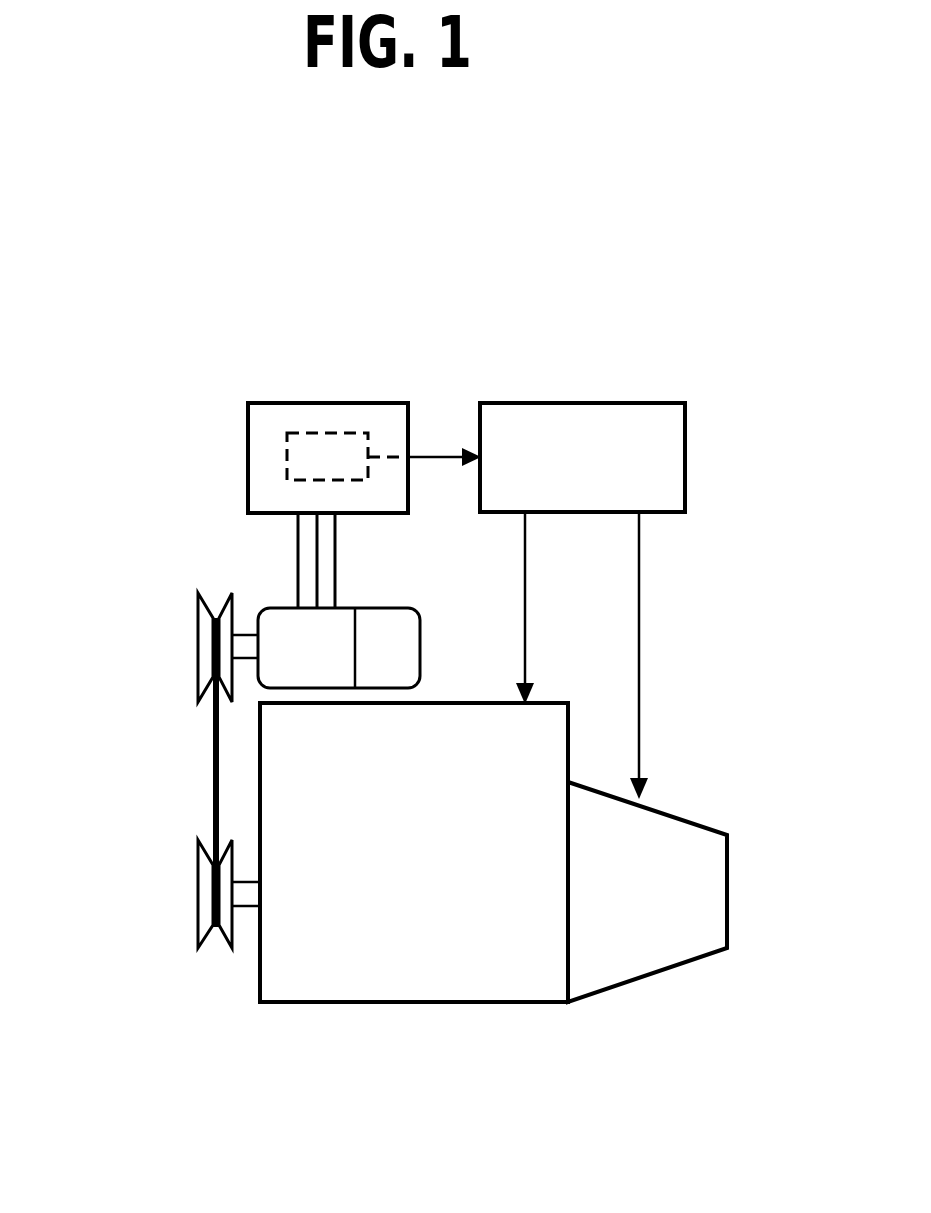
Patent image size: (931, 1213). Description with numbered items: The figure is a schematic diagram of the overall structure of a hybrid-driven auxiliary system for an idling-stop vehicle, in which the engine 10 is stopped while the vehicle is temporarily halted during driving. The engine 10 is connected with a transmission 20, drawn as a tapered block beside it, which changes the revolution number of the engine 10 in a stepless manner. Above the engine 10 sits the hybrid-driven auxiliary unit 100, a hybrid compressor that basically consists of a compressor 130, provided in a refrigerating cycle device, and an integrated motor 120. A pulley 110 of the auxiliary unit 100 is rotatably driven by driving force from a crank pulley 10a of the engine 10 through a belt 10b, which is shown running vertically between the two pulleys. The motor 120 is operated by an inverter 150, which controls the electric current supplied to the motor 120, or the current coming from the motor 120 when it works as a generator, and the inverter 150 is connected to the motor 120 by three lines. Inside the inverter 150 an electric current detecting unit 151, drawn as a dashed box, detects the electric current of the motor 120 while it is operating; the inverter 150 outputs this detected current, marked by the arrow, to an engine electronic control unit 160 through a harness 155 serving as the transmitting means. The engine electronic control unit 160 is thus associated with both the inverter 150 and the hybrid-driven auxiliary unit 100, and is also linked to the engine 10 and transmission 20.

The engine 10 is at (373, 983).
The crank pulley 10a is at (205, 888).
The belt 10b is at (212, 752).
The transmission 20 is at (643, 980).
The hybrid-driven auxiliary unit 100 is at (230, 510).
The pulley 110 is at (197, 627).
The motor 120 is at (295, 645).
The compressor 130 is at (387, 630).
The inverter 150 is at (310, 422).
The electric current detecting unit 151 is at (347, 433).
The harness 155 is at (418, 457).
The engine electronic control unit 160 is at (603, 423).